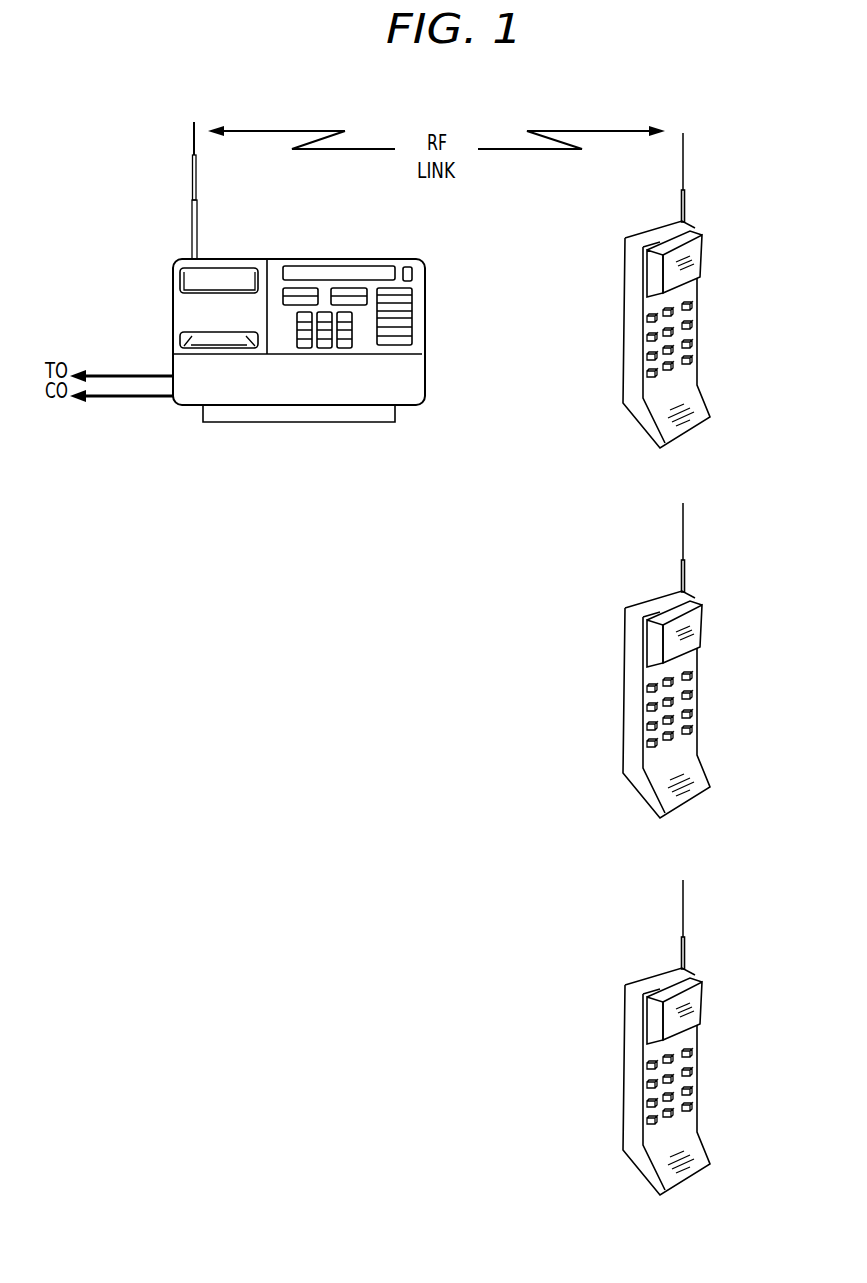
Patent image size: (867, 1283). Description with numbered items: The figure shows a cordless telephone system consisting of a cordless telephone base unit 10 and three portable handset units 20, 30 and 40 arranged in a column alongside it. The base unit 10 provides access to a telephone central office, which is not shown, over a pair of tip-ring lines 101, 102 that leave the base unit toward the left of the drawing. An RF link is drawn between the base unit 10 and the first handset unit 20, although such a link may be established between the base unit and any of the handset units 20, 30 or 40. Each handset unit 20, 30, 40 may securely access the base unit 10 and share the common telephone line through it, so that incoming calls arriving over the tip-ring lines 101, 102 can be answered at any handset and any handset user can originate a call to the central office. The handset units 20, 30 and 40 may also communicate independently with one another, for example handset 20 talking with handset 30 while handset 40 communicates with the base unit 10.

The cordless telephone base unit 10 is at (425, 322).
The handset unit 20 is at (702, 258).
The handset unit 30 is at (693, 660).
The handset unit 40 is at (693, 1037).
The tip-ring line 101 is at (110, 373).
The tip-ring line 102 is at (112, 400).